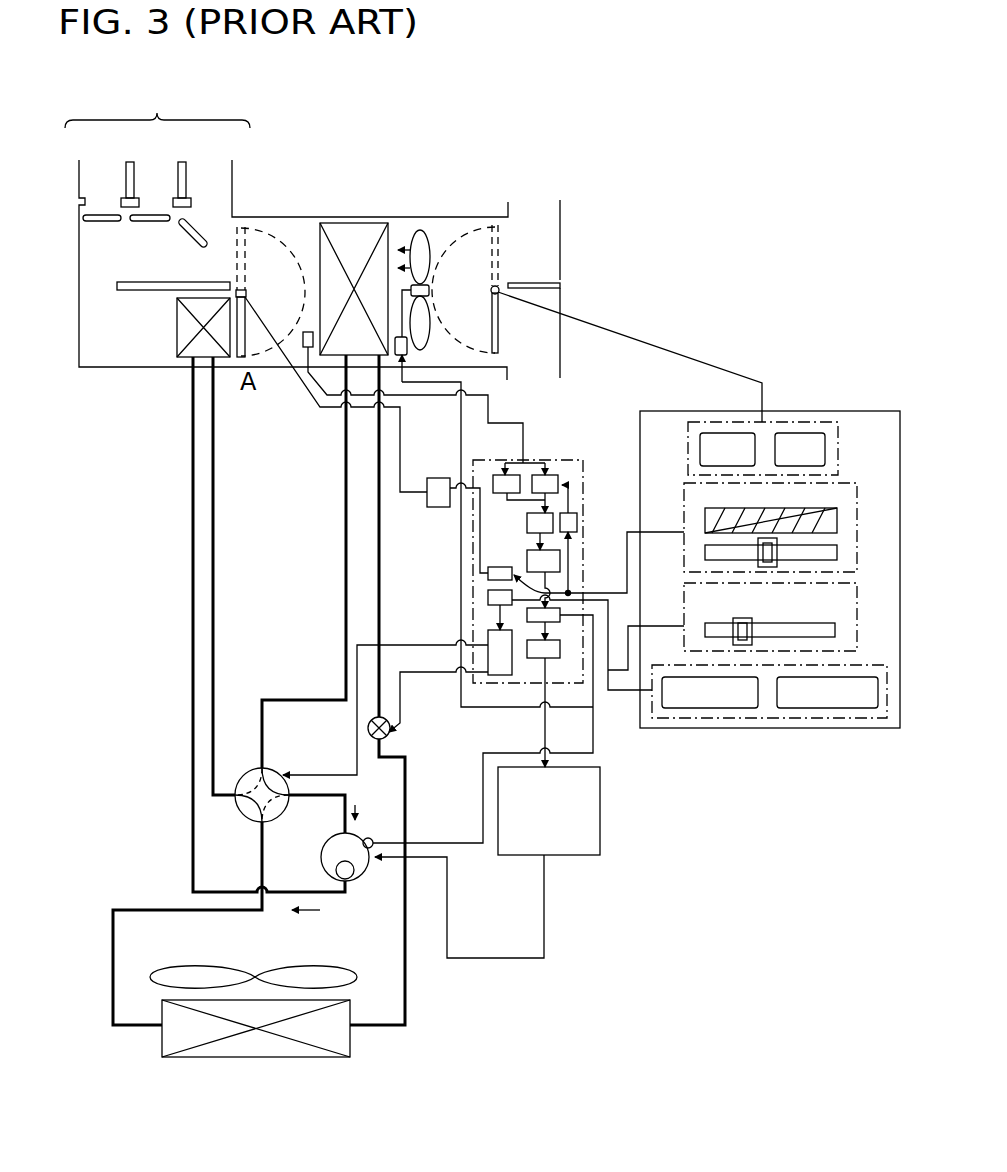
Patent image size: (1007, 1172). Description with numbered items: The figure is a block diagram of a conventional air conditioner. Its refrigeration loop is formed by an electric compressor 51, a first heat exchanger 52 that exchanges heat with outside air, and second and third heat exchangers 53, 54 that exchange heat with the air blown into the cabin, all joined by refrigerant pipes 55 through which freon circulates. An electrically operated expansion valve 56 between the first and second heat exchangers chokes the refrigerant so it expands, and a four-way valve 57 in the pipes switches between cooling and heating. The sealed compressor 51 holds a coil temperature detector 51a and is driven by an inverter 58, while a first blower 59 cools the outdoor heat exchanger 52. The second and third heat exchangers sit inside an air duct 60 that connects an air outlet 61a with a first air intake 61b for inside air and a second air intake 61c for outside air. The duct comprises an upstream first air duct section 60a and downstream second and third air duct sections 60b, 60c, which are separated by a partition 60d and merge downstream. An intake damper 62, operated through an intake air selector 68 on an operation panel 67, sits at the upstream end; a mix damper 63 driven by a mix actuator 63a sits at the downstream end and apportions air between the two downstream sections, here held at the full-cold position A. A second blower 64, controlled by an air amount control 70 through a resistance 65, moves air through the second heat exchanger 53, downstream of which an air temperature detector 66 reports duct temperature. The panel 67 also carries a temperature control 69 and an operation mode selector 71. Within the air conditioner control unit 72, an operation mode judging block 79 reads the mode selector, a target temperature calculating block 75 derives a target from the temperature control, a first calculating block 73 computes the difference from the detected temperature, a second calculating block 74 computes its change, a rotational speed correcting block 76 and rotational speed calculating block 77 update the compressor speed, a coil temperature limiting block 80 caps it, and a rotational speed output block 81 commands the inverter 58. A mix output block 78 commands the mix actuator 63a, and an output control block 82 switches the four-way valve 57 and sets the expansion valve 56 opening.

The electric compressor 51 is at (365, 872).
The coil temperature detector 51a is at (372, 838).
The first heat exchanger 52 is at (308, 1057).
The second heat exchanger 53 is at (352, 223).
The third heat exchanger 54 is at (182, 358).
The refrigerant pipes 55 is at (192, 624).
The electrically operated expansion valve 56 is at (390, 736).
The four-way valve 57 is at (240, 815).
The inverter 58 is at (600, 830).
The first blower 59 is at (280, 970).
The air duct 60 is at (275, 370).
The first air duct section 60a is at (292, 228).
The second air duct section 60b is at (96, 334).
The third air duct section 60c is at (96, 260).
The partition 60d is at (120, 294).
The air outlet 61a is at (159, 165).
The first air intake 61b is at (542, 205).
The second air intake 61c is at (548, 368).
The intake damper 62 is at (498, 352).
The mix damper 63 is at (241, 360).
The mix actuator 63a is at (436, 507).
The second blower 64 is at (425, 235).
The resistance 65 is at (407, 348).
The air temperature detector 66 is at (305, 332).
The operation panel 67 is at (808, 411).
The intake air selector 68 is at (838, 455).
The temperature control 69 is at (857, 550).
The air amount control 70 is at (857, 642).
The operation mode selector 71 is at (855, 718).
The air conditioner control unit 72 is at (540, 458).
The first calculating block 73 is at (560, 475).
The second calculating block 74 is at (500, 475).
The target temperature calculating block 75 is at (577, 519).
The rotational speed correcting block 76 is at (527, 516).
The rotational speed calculating block 77 is at (560, 568).
The mix output block 78 is at (488, 580).
The operation mode judging block 79 is at (488, 603).
The coil temperature limiting block 80 is at (560, 620).
The rotational speed output block 81 is at (530, 658).
The output control block 82 is at (510, 675).